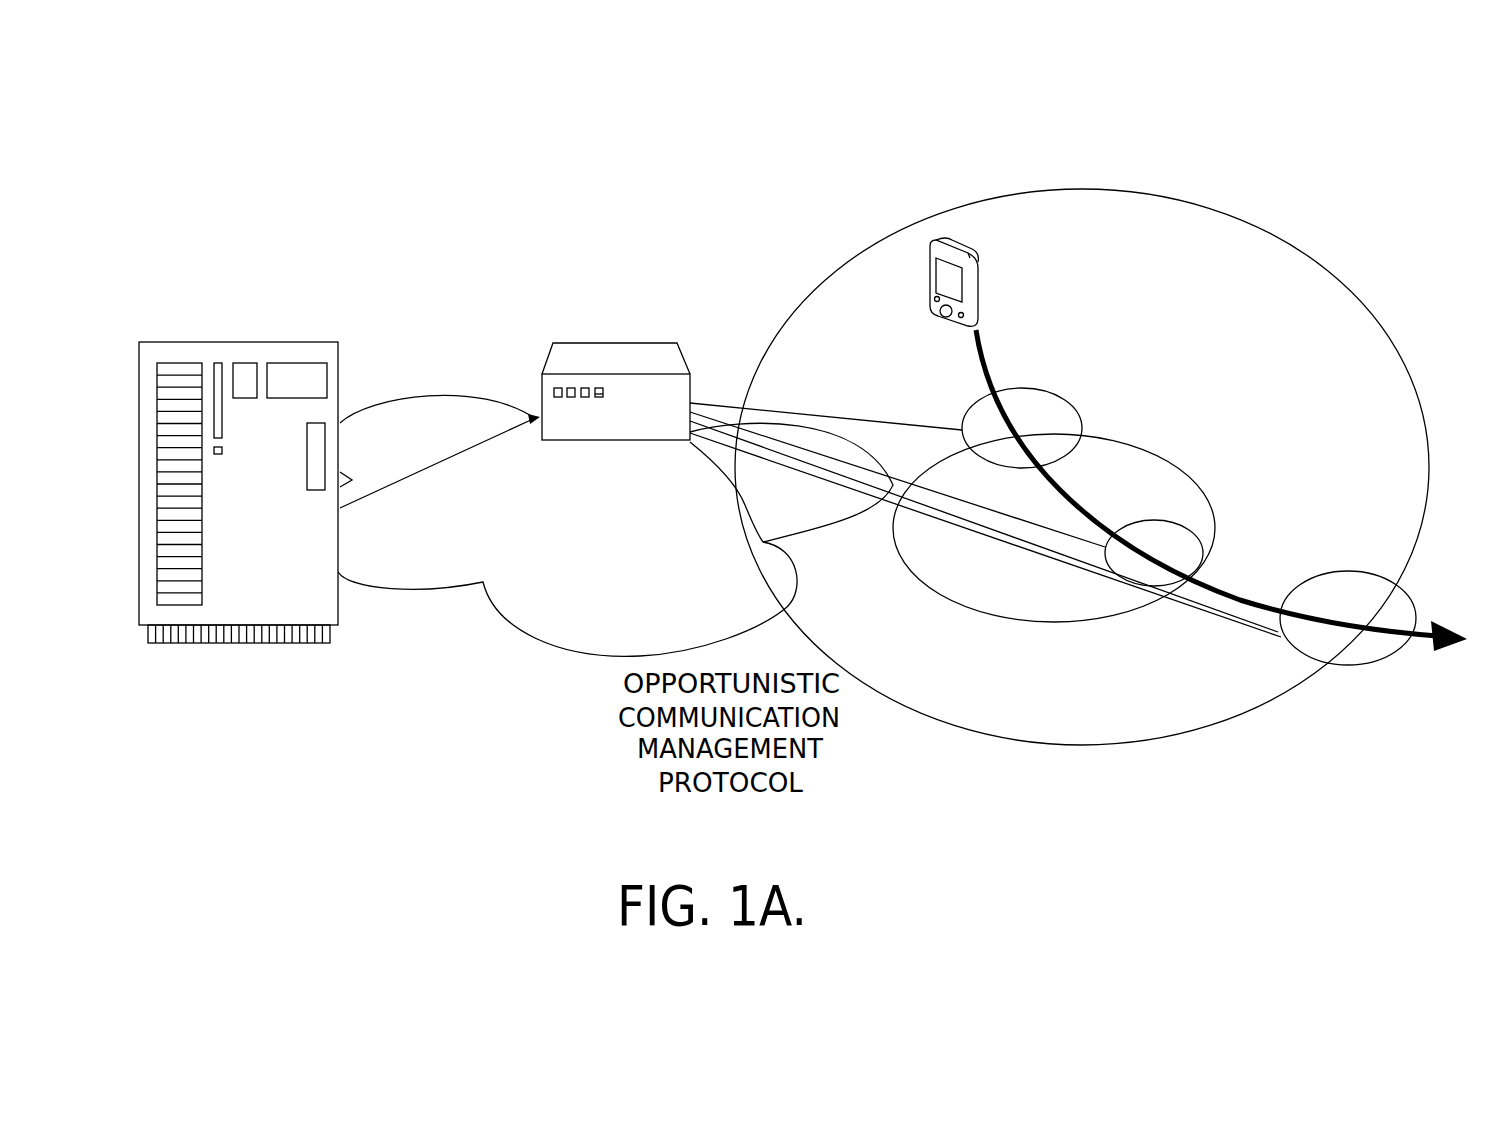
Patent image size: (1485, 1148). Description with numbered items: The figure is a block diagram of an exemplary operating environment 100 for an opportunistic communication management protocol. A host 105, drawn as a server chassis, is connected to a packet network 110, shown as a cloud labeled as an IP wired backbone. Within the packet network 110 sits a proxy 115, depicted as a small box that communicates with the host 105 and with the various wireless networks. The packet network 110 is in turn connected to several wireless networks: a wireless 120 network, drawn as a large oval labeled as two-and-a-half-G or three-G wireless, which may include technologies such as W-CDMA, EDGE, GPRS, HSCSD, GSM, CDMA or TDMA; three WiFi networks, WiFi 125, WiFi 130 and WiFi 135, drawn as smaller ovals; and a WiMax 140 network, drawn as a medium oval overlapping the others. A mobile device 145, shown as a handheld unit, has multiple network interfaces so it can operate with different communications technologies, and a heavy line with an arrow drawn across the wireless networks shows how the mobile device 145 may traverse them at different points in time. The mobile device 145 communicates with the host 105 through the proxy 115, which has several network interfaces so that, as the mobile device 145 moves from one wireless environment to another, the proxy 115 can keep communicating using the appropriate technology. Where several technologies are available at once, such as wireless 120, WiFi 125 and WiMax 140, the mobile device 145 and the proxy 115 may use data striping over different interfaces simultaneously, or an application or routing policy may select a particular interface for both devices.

The operating environment 100 is at (482, 826).
The host 105 is at (245, 645).
The packet network 110 is at (563, 647).
The proxy 115 is at (543, 363).
The wireless 120 is at (1216, 728).
The WiFi 125 is at (1080, 410).
The WiFi 130 is at (1203, 537).
The WiFi 135 is at (1361, 666).
The WiMax 140 is at (1005, 621).
The mobile device 145 is at (974, 255).